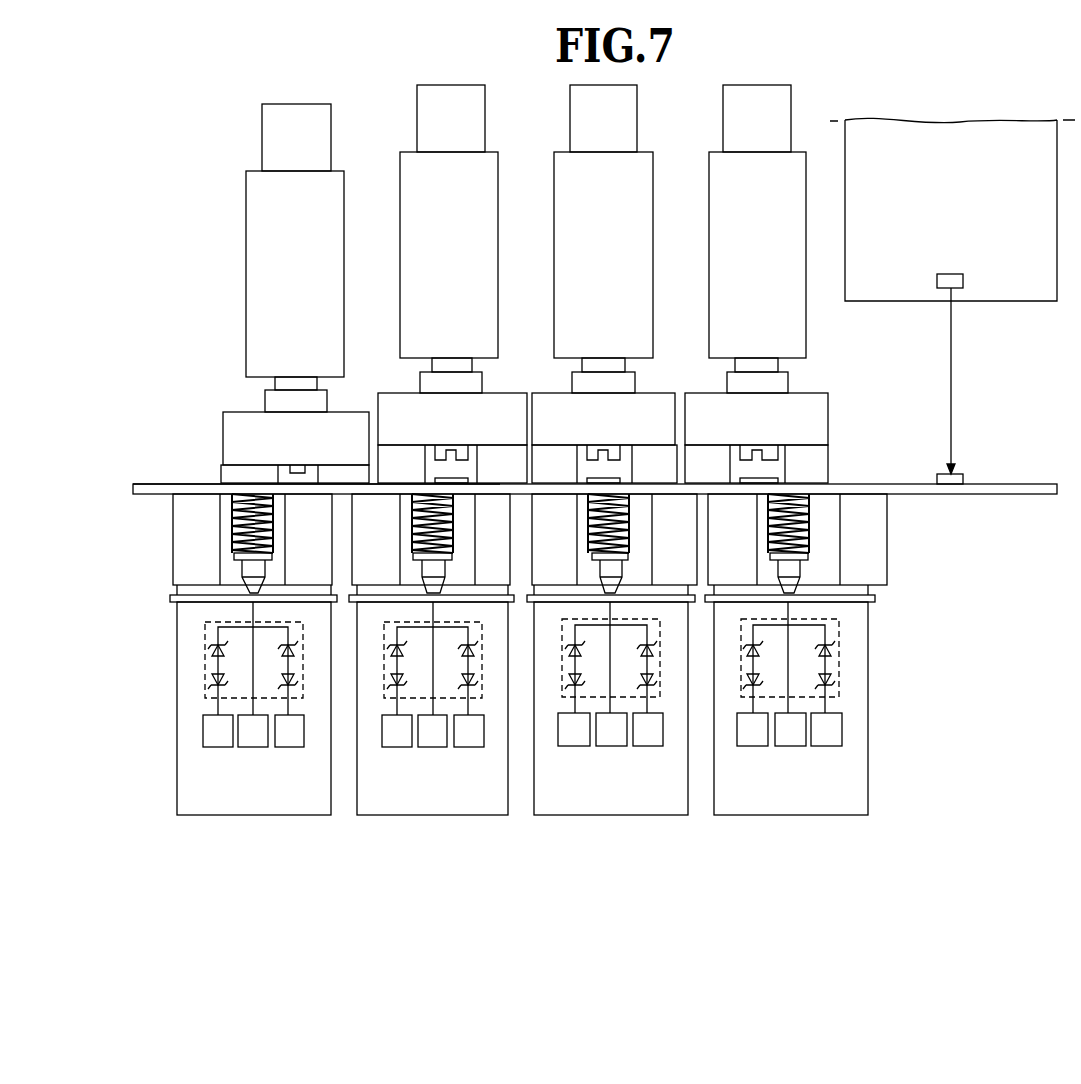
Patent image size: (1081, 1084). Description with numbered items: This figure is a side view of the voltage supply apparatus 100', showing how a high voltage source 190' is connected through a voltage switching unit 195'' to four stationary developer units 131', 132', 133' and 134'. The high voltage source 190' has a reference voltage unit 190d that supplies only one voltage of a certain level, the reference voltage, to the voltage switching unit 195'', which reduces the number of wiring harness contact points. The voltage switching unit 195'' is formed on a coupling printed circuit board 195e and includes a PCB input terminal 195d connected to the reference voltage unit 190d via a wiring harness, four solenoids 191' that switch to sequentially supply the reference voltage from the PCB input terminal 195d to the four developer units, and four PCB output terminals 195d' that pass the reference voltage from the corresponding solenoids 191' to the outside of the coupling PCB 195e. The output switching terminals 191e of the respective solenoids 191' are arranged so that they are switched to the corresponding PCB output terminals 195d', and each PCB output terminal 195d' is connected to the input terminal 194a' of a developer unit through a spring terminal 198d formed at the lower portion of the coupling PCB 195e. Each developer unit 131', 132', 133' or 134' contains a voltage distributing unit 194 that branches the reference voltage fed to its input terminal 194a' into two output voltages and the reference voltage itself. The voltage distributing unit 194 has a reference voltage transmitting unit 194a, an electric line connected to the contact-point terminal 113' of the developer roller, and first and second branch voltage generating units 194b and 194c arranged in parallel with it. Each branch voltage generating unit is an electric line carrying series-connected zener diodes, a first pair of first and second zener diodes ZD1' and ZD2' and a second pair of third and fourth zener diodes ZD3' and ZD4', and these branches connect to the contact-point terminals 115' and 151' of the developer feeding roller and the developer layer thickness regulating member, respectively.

The voltage supply apparatus 100' is at (472, 336).
The solenoid 191' is at (257, 258).
The output switching terminal 191e is at (262, 473).
The voltage switching unit 195'' is at (286, 449).
The PCB output terminal 195d' is at (233, 467).
The spring terminal 198d is at (238, 523).
The input terminal 194a' is at (175, 589).
The reference voltage transmitting unit 194a is at (200, 548).
The second branch voltage generating unit 194c is at (253, 612).
The voltage distributing unit 194 is at (205, 622).
The first zener diode ZD1' is at (160, 655).
The first branch voltage generating unit 194b is at (205, 672).
The second zener diode ZD2' is at (161, 695).
The third zener diode ZD3' is at (358, 708).
The fourth zener diode ZD4' is at (356, 736).
The contact-point terminal of developer feeding roller 115' is at (152, 734).
The contact-point terminal of developer roller 113' is at (256, 765).
The contact-point terminal of developer layer thickness regulating member 151' is at (306, 793).
The first stationary developer unit 131' is at (231, 743).
The second stationary developer unit 132' is at (431, 746).
The third stationary developer unit 133' is at (611, 746).
The fourth stationary developer unit 134' is at (790, 746).
The high voltage source 190' is at (952, 174).
The reference voltage unit 190d is at (955, 295).
The PCB input terminal 195d is at (924, 444).
The coupling printed circuit board 195e is at (993, 499).